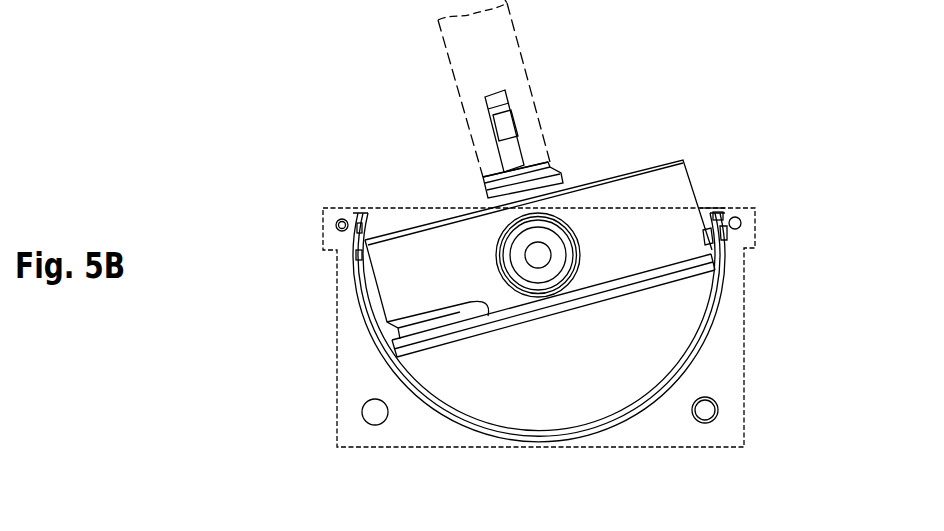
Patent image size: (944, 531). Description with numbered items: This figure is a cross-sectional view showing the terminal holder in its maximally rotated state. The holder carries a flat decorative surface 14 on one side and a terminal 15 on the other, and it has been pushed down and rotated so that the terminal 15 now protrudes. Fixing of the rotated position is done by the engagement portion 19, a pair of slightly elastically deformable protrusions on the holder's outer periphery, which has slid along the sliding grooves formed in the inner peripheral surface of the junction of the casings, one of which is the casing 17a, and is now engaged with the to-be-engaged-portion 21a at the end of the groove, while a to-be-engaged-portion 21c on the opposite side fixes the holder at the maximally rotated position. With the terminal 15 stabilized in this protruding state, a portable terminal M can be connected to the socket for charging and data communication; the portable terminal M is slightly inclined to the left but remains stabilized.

The decorative surface 14 is at (492, 337).
The terminal 15 is at (493, 90).
The casing 17a is at (744, 343).
The engagement portion 19 is at (718, 211).
The to-be-engaged-portion 21a is at (726, 234).
The to-be-engaged-portion 21c is at (354, 237).
The portable terminal M is at (532, 86).